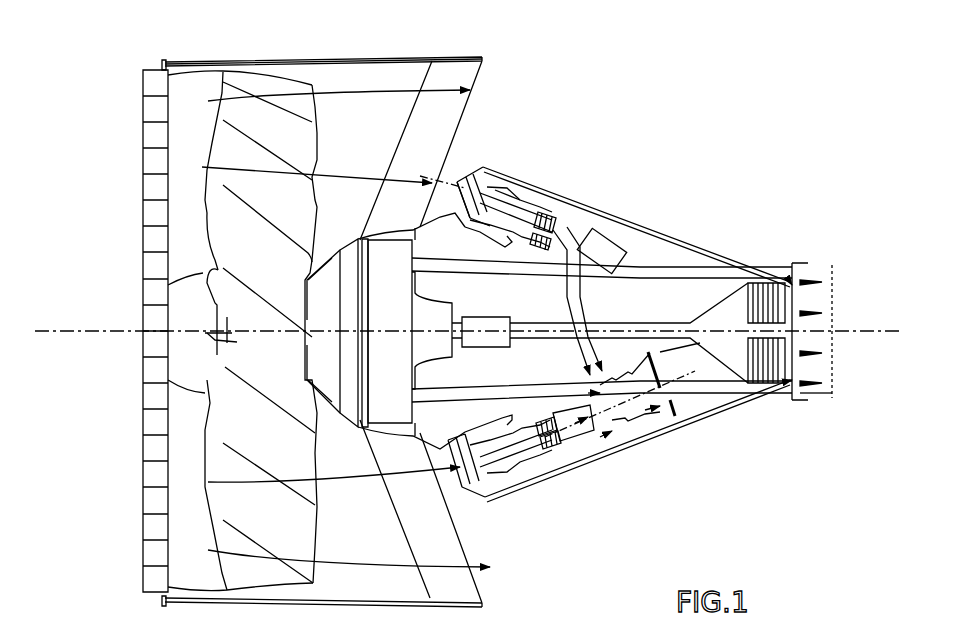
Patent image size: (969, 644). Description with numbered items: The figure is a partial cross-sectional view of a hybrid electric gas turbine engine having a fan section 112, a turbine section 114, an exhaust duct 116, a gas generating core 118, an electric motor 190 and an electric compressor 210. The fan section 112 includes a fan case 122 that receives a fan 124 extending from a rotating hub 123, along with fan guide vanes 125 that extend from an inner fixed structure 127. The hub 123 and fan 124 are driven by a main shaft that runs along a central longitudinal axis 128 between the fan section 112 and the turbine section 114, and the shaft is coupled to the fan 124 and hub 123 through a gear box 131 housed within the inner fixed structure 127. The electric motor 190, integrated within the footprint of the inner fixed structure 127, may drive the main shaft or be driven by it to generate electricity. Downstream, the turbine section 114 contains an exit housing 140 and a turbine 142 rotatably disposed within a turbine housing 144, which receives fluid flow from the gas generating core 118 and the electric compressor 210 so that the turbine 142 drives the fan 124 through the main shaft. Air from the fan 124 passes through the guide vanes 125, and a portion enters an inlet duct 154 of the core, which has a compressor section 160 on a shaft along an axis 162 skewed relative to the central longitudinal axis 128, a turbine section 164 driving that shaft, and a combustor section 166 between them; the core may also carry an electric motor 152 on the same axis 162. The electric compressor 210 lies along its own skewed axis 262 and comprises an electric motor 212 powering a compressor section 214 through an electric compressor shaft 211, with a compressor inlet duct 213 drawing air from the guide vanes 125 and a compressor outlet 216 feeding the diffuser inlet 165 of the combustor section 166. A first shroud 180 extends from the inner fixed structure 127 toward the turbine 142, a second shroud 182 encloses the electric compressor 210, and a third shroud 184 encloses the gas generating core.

The fan section 112 is at (364, 55).
The turbine section 114 is at (808, 254).
The exhaust duct 116 is at (721, 373).
The gas generating core 118 is at (590, 478).
The fan case 122 is at (345, 60).
The rotating hub 123 is at (197, 295).
The fan 124 is at (288, 155).
The fan guide vanes 125 is at (457, 107).
The inner fixed structure 127 is at (376, 427).
The central longitudinal axis 128 is at (63, 333).
The gear box 131 is at (353, 318).
The exit housing 140 is at (818, 374).
The turbine 142 is at (794, 292).
The turbine housing 144 is at (793, 397).
The electric motor 152 is at (583, 435).
The inlet duct 154 is at (462, 483).
The compressor section 160 is at (544, 502).
The axis 162 is at (455, 468).
The turbine section 164 is at (672, 413).
The diffuser inlet 165 is at (608, 372).
The combustor section 166 is at (640, 423).
The first shroud 180 is at (676, 262).
The second shroud 182 is at (634, 217).
The third shroud 184 is at (629, 448).
The electric motor 190 is at (497, 349).
The electric compressor 210 is at (528, 192).
The electric compressor shaft 211 is at (505, 240).
The electric motor 212 is at (601, 250).
The compressor inlet duct 213 is at (456, 167).
The compressor section 214 is at (503, 187).
The compressor outlet 216 is at (569, 220).
The axis 262 is at (422, 172).